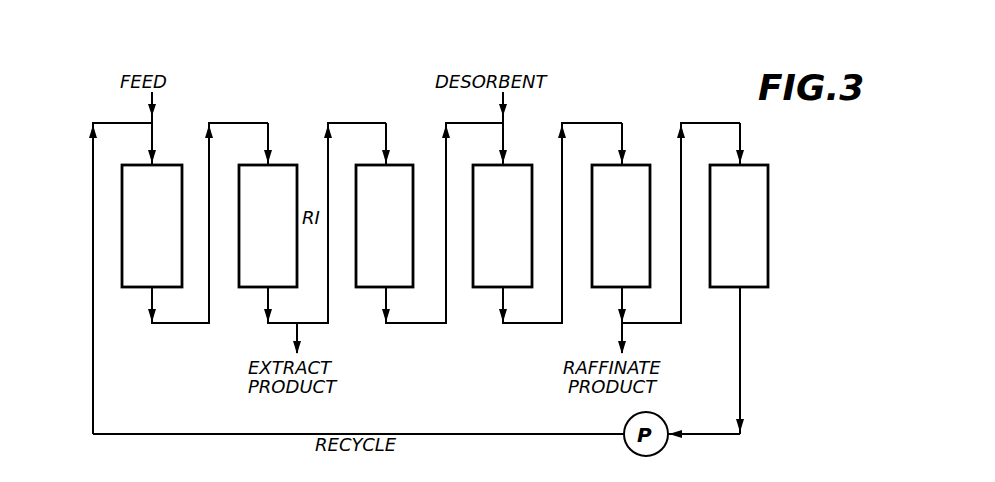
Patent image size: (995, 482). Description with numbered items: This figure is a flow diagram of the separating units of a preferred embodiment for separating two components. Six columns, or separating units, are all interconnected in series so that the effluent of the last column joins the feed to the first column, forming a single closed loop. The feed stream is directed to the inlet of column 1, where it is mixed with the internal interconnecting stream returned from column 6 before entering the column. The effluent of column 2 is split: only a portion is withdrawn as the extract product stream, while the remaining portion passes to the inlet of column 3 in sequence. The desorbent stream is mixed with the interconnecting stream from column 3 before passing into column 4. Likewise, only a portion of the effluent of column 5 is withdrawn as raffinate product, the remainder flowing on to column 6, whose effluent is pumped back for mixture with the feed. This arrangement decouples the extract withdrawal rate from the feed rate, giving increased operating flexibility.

The first column 1 is at (195, 183).
The second column 2 is at (312, 198).
The third column 3 is at (429, 183).
The fourth column 4 is at (547, 183).
The fifth column 5 is at (666, 198).
The sixth column 6 is at (739, 239).